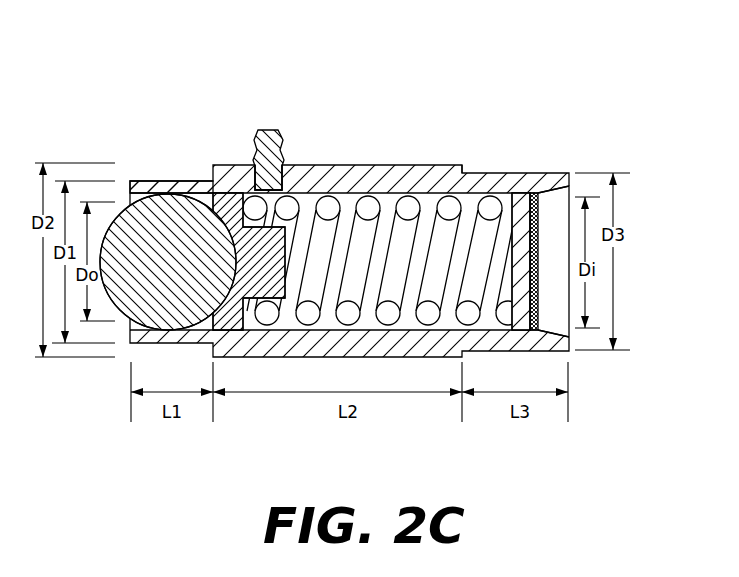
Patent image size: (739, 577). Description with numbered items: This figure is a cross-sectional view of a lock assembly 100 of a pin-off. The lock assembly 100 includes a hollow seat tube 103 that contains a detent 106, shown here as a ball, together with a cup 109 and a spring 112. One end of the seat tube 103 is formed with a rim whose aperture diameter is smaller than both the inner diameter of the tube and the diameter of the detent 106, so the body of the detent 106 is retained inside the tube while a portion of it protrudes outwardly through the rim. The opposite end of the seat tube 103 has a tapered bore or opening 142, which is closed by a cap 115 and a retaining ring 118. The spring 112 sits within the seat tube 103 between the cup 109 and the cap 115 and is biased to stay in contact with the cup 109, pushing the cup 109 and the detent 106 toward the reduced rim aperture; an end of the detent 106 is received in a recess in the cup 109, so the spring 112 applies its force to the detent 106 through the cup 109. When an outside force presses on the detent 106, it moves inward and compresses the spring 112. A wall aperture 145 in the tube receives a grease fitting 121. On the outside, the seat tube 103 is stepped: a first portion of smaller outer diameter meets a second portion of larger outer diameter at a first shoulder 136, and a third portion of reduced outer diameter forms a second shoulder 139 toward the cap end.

The lock assembly 100 is at (354, 194).
The seat tube 103 is at (322, 165).
The detent 106 is at (119, 200).
The cup 109 is at (212, 192).
The spring 112 is at (430, 192).
The cap 115 is at (515, 193).
The retaining ring 118 is at (536, 193).
The grease fitting 121 is at (270, 130).
The first shoulder 136 is at (212, 181).
The second shoulder 139 is at (463, 172).
The tapered bore or opening 142 is at (560, 188).
The wall aperture 145 is at (285, 165).